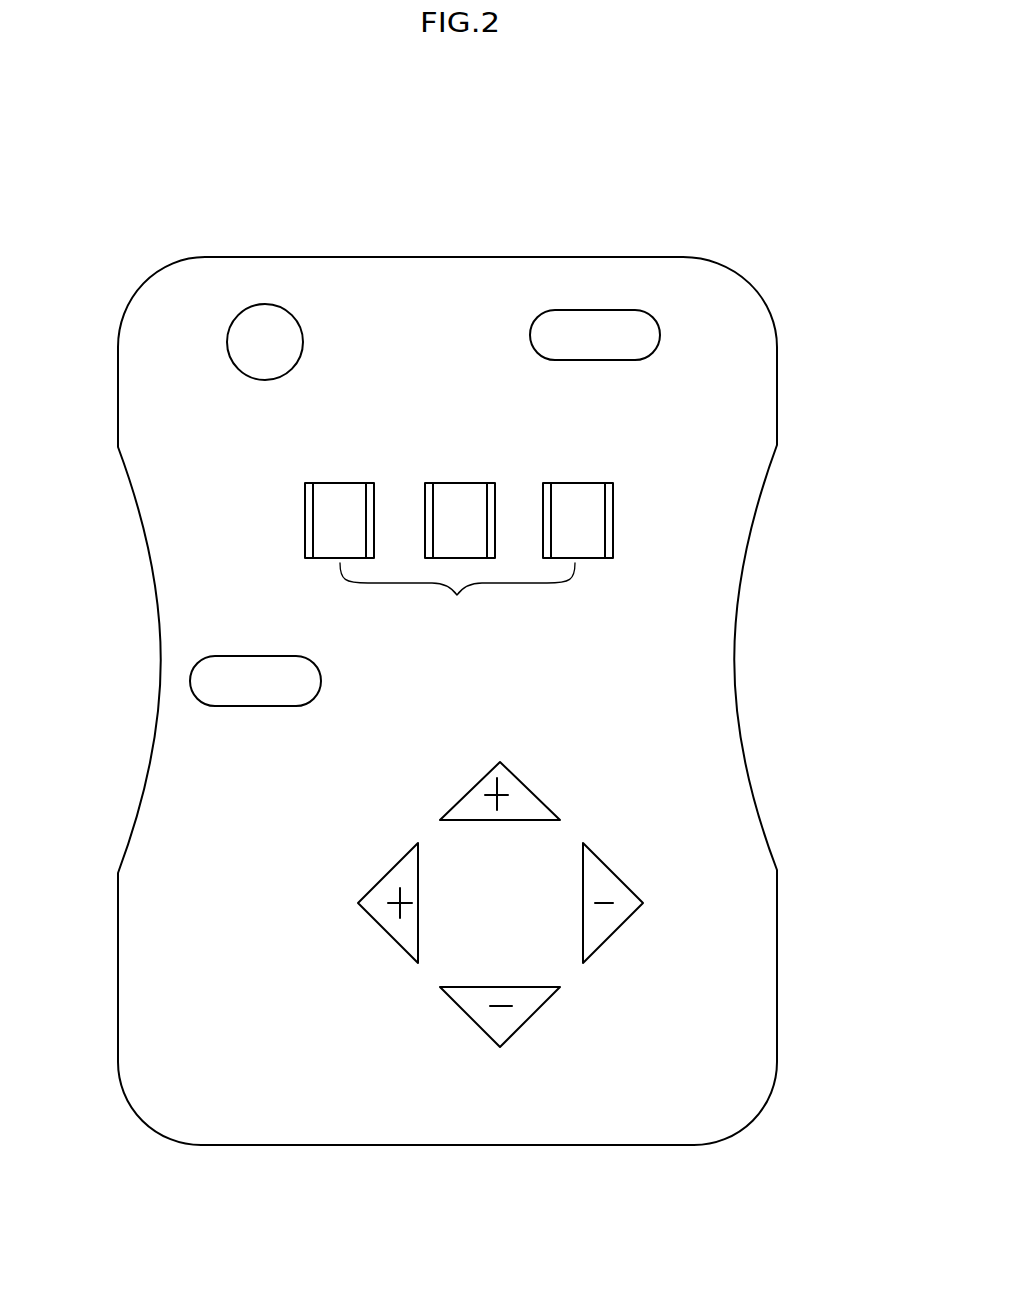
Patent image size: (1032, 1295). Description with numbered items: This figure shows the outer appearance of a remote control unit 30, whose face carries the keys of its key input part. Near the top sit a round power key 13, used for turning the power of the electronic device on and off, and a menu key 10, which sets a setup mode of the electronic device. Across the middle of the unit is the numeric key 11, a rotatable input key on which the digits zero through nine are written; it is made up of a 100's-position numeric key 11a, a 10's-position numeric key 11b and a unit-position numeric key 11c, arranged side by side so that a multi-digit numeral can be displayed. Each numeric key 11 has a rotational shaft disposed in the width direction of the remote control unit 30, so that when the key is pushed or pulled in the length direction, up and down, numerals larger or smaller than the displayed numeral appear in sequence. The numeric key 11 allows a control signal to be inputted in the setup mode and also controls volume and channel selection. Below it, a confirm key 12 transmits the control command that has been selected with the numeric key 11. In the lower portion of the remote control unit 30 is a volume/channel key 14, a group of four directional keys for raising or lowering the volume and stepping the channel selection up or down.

The remote control unit 30 is at (765, 146).
The menu key 10 is at (608, 285).
The numeric key 11 is at (459, 382).
The 100's-position numeric key 11a is at (340, 483).
The 10's-position numeric key 11b is at (462, 483).
The unit-position numeric key 11c is at (577, 483).
The confirm key 12 is at (172, 681).
The power key 13 is at (266, 304).
The volume/channel key 14 is at (646, 811).